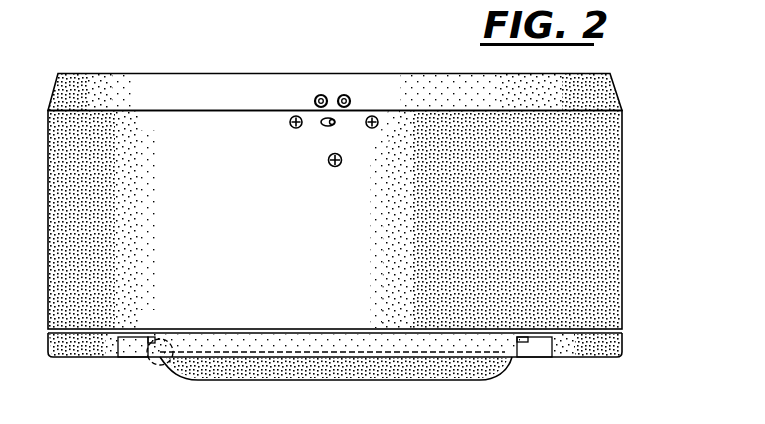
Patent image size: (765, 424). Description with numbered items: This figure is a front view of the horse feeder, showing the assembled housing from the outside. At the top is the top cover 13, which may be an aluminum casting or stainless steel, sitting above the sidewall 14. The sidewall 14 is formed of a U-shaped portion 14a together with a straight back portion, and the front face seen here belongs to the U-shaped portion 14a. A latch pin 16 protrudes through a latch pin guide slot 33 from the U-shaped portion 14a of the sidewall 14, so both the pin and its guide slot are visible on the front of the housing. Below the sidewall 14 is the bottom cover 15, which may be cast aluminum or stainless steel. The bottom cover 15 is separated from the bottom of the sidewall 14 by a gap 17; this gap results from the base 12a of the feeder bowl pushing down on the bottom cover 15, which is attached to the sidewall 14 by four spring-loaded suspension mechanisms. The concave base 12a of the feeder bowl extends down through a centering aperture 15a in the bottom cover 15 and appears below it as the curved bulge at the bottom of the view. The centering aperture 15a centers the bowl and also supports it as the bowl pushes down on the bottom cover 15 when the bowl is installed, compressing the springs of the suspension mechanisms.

The concave base 12a is at (425, 375).
The top cover 13 is at (624, 87).
The sidewall 14 is at (630, 198).
The U-shaped portion 14a is at (244, 4).
The bottom cover 15 is at (630, 349).
The centering aperture 15a is at (157, 366).
The latch pin 16 is at (336, 124).
The gap 17 is at (623, 332).
The latch pin guide slot 33 is at (321, 125).